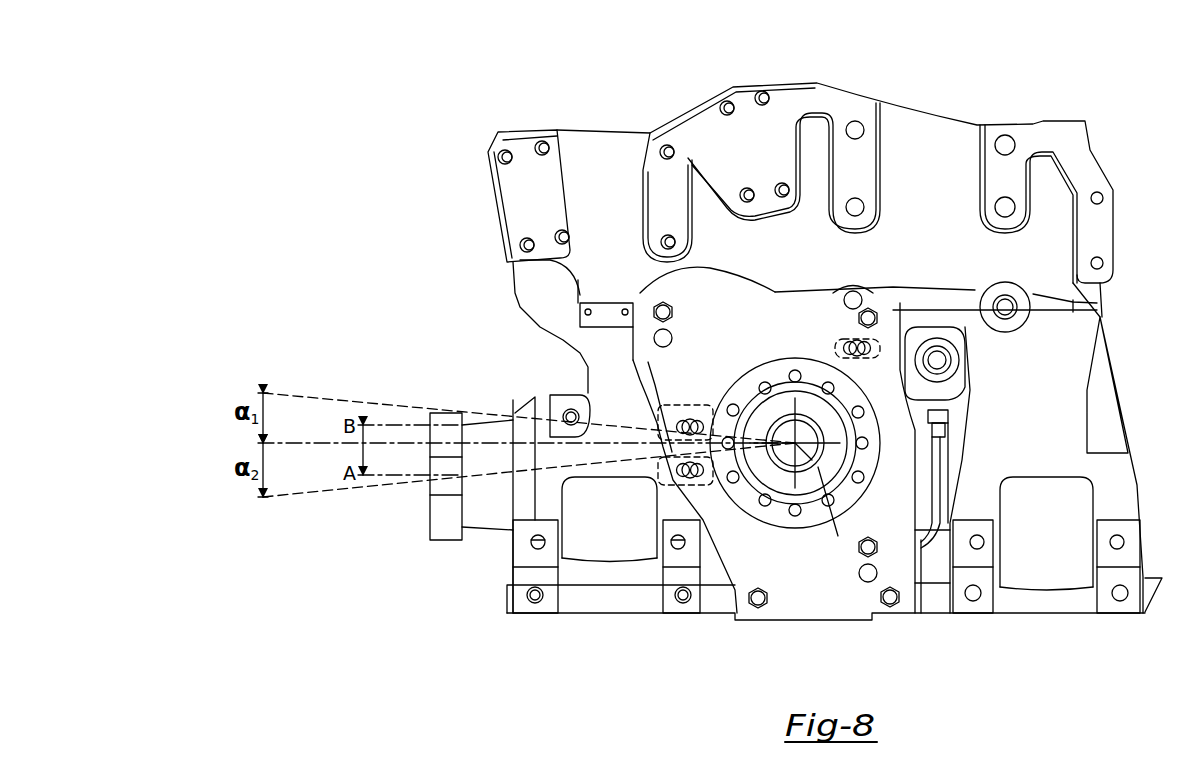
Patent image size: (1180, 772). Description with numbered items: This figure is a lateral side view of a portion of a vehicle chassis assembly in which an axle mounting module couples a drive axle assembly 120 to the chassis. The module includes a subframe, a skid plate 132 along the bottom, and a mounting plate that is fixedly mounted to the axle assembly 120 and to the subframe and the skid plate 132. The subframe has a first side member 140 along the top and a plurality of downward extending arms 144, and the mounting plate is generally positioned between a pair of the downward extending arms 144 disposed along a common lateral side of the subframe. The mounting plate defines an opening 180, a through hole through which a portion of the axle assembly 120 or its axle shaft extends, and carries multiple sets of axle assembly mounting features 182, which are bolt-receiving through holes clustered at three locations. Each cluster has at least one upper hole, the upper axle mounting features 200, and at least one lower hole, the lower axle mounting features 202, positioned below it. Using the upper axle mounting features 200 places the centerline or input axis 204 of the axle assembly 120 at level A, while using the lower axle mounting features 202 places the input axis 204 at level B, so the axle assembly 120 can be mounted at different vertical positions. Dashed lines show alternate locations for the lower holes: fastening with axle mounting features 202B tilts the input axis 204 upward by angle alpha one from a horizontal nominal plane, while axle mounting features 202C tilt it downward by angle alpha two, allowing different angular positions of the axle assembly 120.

The axle assembly 120 is at (430, 521).
The skid plate 132 is at (627, 607).
The first side member 140 is at (924, 115).
The downward extending arms 144 is at (572, 341).
The opening 180 is at (750, 512).
The axle assembly mounting features 182 is at (680, 322).
The upper axle mounting features 200 is at (782, 407).
The lower axle mounting features 202 is at (688, 454).
The axle mounting features 202B is at (676, 474).
The axle mounting features 202C is at (717, 481).
The input axis 204 is at (385, 482).